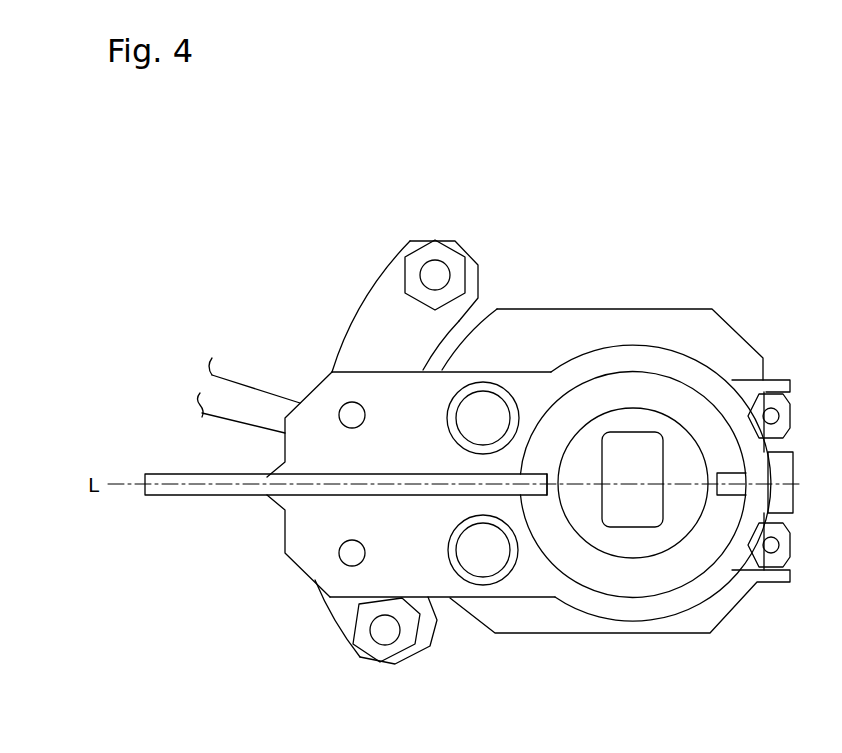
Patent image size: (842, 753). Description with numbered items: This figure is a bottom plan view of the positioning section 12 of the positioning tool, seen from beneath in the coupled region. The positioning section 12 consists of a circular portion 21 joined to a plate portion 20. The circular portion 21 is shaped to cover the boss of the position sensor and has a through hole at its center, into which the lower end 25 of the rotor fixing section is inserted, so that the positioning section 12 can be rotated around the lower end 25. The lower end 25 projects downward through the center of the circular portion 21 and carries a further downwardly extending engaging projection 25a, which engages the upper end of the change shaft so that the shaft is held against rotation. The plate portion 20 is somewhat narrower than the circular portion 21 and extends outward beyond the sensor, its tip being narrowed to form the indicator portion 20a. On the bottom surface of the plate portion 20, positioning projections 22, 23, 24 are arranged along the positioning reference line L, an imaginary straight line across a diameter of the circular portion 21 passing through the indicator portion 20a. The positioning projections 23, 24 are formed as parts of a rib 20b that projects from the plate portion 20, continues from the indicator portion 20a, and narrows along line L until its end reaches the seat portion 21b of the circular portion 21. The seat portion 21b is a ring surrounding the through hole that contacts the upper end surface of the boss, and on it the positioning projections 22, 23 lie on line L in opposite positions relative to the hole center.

The positioning section 12 is at (328, 313).
The plate portion 20 is at (428, 405).
The indicator portion 20a is at (195, 477).
The rib 20b is at (342, 490).
The circular portion 21 is at (622, 373).
The seat portion 21b is at (643, 608).
The positioning projection 22 is at (727, 473).
The positioning projection 23 is at (548, 475).
The positioning projection 24 is at (282, 503).
The lower end 25 is at (687, 500).
The engaging projection 25a is at (642, 490).